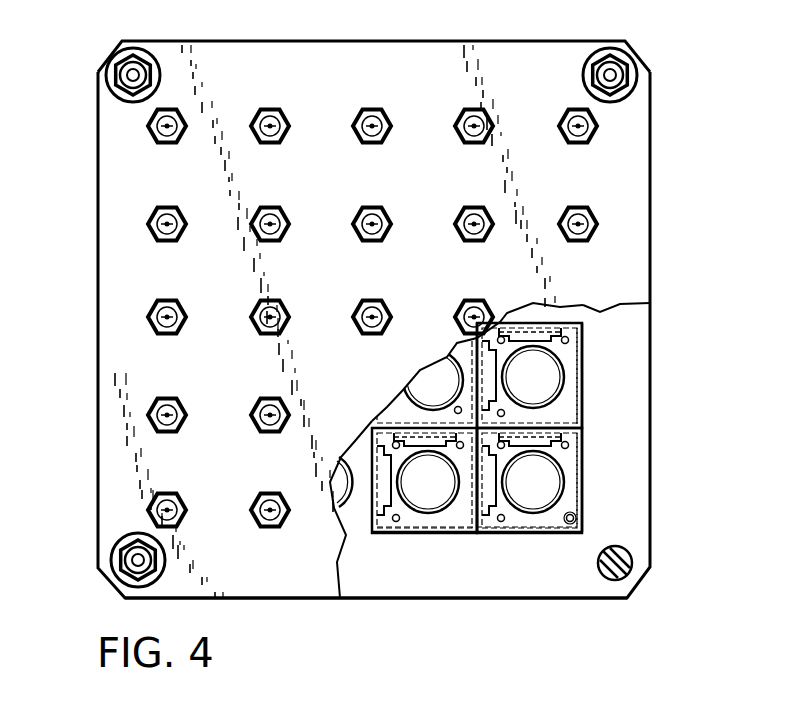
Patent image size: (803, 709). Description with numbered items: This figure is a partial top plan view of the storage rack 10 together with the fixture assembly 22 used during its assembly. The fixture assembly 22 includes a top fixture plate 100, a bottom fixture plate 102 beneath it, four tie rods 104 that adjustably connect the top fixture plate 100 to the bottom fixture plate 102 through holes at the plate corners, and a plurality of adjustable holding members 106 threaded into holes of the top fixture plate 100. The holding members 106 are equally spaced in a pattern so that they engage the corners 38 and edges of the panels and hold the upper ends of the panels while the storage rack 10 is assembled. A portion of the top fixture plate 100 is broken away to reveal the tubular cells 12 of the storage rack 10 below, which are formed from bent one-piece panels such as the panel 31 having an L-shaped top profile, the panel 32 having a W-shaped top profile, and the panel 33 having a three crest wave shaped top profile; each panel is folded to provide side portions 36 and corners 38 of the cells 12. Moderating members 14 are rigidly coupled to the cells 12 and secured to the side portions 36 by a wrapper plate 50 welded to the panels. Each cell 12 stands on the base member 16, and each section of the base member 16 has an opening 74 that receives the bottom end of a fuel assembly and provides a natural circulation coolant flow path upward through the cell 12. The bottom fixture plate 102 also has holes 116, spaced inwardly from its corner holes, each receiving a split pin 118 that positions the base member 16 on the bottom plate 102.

The storage rack 10 is at (608, 529).
The tubular cells 12 is at (592, 405).
The moderating members 14 is at (343, 517).
The base member 16 is at (588, 432).
The fixture assembly 22 is at (548, 36).
The panels having an L-shaped top profile 31 is at (587, 468).
The panels having a W-shaped top profile 32 is at (590, 350).
The panels having a three crest wave shaped top profile 33 is at (598, 310).
The side portions 36 is at (434, 545).
The corners 38 is at (487, 535).
The wrapper plate 50 is at (447, 350).
The opening 74 is at (530, 395).
The top fixture plate 100 is at (395, 40).
The bottom fixture plate 102 is at (445, 600).
The tie rods 104 is at (112, 58).
The adjustable holding members 106 is at (270, 108).
The holes 116 is at (568, 521).
The split pin 118 is at (574, 518).